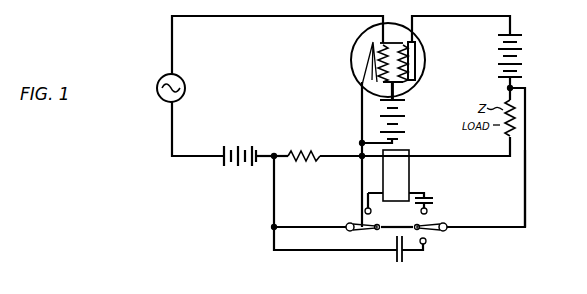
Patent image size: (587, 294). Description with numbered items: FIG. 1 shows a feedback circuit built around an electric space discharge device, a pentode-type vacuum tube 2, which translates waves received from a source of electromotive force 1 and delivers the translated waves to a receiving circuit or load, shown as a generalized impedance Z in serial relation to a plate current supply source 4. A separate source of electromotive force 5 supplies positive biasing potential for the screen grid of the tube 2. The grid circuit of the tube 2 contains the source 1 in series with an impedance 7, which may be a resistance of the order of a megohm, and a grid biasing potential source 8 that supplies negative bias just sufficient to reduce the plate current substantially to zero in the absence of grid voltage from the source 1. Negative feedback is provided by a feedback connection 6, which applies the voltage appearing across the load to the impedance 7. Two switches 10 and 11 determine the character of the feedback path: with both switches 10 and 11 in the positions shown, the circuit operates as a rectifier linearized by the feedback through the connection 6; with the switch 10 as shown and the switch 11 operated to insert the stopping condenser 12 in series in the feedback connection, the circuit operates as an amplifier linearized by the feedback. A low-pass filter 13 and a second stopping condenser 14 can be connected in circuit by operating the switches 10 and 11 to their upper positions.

The source of electromotive force 1 is at (185, 88).
The vacuum tube 2 is at (352, 62).
The plate current supply source 4 is at (518, 60).
The source of electromotive force 5 is at (404, 120).
The feedback connection 6 is at (524, 187).
The impedance 7 is at (307, 153).
The grid biasing potential source 8 is at (236, 168).
The switch 10 is at (362, 229).
The switch 11 is at (436, 230).
The stopping condenser 12 is at (396, 254).
The low-pass filter 13 is at (382, 172).
The stopping condenser 14 is at (430, 199).